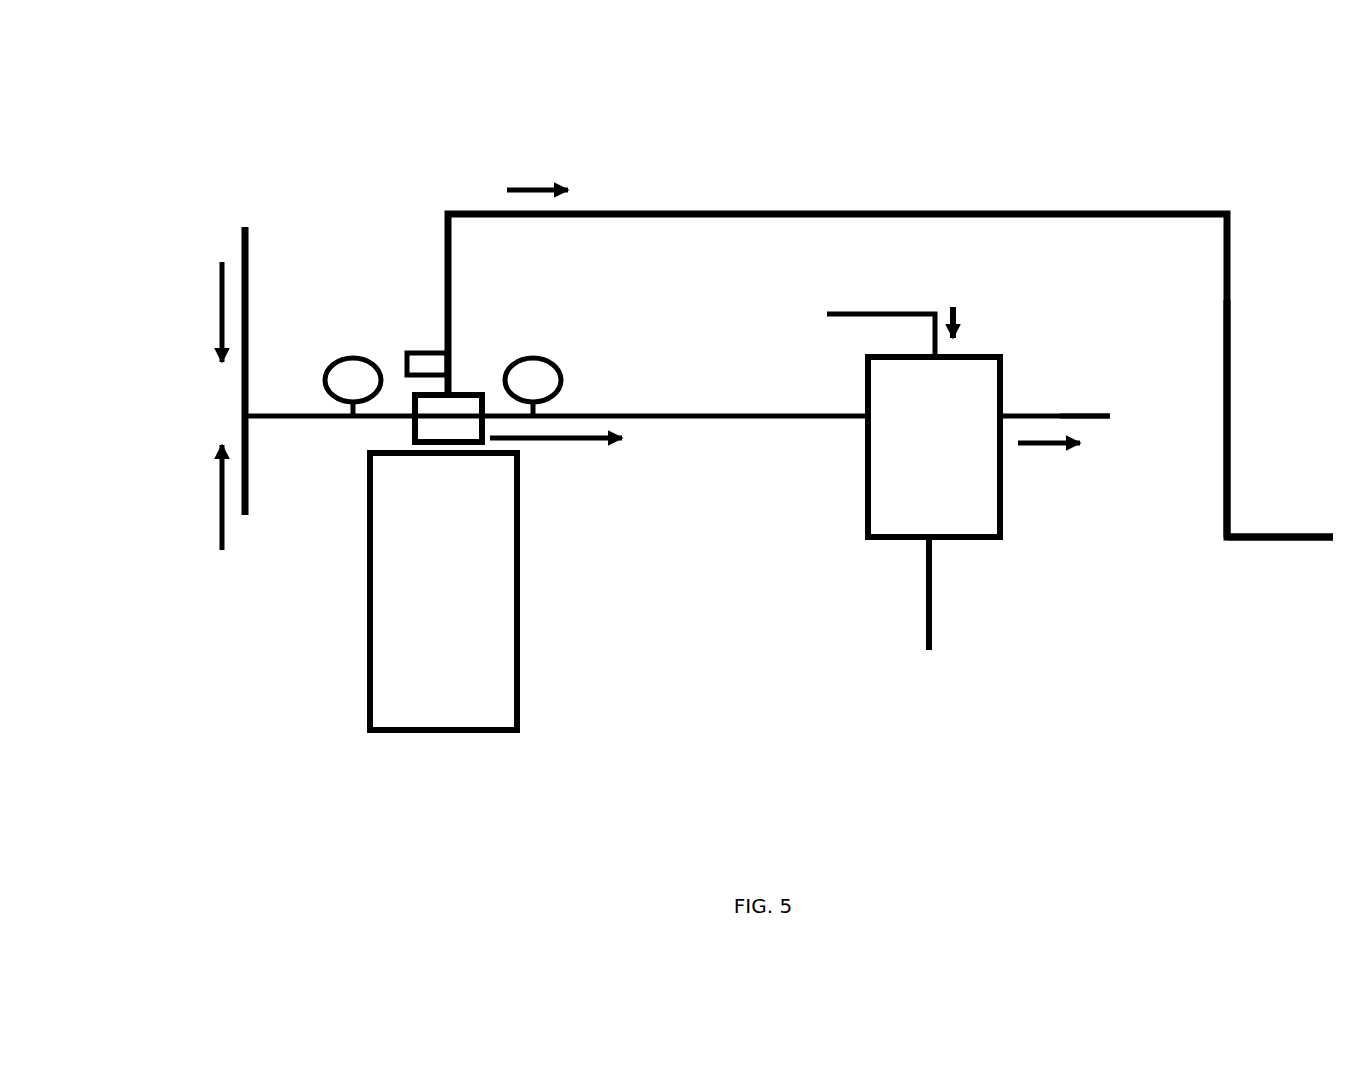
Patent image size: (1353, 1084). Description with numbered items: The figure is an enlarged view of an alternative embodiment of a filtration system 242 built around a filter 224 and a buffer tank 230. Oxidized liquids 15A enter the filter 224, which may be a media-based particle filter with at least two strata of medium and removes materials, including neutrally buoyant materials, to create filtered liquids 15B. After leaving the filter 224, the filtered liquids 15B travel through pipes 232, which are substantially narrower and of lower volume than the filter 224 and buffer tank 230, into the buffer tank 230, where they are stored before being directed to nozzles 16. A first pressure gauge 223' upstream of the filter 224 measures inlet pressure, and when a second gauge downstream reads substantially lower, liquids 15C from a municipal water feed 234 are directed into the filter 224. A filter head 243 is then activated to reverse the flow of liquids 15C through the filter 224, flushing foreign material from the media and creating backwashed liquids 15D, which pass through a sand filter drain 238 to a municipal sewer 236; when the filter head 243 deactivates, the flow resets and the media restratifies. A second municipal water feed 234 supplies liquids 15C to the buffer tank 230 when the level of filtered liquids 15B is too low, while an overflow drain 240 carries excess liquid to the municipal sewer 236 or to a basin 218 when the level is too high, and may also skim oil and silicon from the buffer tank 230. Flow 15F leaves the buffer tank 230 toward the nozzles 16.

The municipal water feed 234 is at (228, 238).
The pipes 232 is at (700, 409).
The liquids 15C is at (206, 306).
The oxidized liquids 15A is at (199, 494).
The backwashed liquids 15D is at (527, 168).
The filtered liquids 15B is at (604, 452).
The fluid flow 15F is at (1057, 449).
The first pressure gauge 223' is at (328, 298).
The filter head 243 is at (443, 427).
The sand filter drain 238 is at (1047, 189).
The municipal sewer 236 is at (1318, 531).
The filter 224 is at (463, 690).
The buffer tank 230 is at (978, 542).
The overflow drain 240 is at (1015, 396).
The basin 218 is at (1108, 439).
The nozzles 16 is at (913, 651).
The filtration system 242 is at (1120, 596).